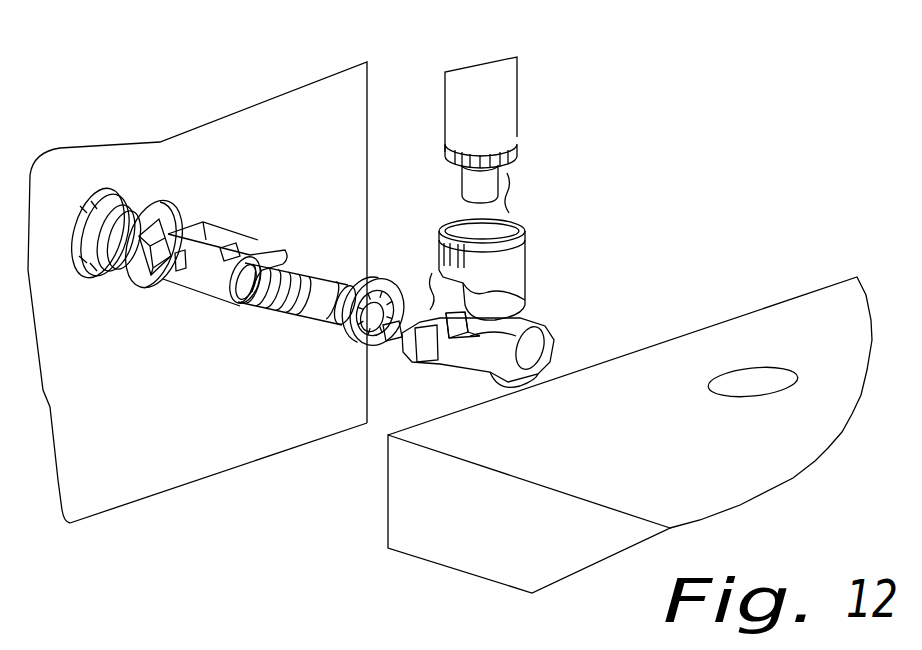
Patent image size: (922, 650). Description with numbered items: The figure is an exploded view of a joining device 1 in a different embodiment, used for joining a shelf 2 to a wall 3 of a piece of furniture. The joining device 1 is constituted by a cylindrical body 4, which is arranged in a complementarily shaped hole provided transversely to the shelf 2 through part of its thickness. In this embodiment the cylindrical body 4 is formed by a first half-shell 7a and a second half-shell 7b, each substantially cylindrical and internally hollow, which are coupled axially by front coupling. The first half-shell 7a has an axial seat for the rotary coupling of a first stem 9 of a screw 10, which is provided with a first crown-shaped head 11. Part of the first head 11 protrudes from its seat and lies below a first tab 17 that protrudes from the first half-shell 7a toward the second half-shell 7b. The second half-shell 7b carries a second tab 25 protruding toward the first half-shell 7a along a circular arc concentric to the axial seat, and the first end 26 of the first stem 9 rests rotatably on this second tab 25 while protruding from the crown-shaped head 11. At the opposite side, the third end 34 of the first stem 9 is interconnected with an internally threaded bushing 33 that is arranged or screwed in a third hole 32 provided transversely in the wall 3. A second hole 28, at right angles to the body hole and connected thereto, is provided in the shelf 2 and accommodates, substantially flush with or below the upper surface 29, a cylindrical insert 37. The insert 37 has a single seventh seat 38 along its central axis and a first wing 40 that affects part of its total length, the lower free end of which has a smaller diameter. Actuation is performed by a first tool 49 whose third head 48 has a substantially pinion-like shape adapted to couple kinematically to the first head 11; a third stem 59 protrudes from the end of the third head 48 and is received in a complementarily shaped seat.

The joining device 1 is at (398, 250).
The shelf 2 is at (743, 473).
The wall 3 is at (300, 103).
The cylindrical body 4 is at (288, 385).
The first half-shell 7a is at (209, 243).
The second half-shell 7b is at (468, 368).
The first stem 9 is at (283, 300).
The screw 10 is at (296, 283).
The first head 11 is at (397, 326).
The first tab 17 is at (231, 247).
The second tab 25 is at (392, 362).
The first end 26 is at (332, 277).
The second hole 28 is at (744, 367).
The upper surface 29 is at (785, 302).
The third hole 32 is at (111, 175).
The internally threaded bushing 33 is at (142, 286).
The third end 34 is at (254, 313).
The insert 37 is at (520, 246).
The seventh seat 38 is at (501, 227).
The first wing 40 is at (508, 283).
The third head 48 is at (531, 135).
The first tool 49 is at (527, 88).
The third stem 59 is at (476, 183).